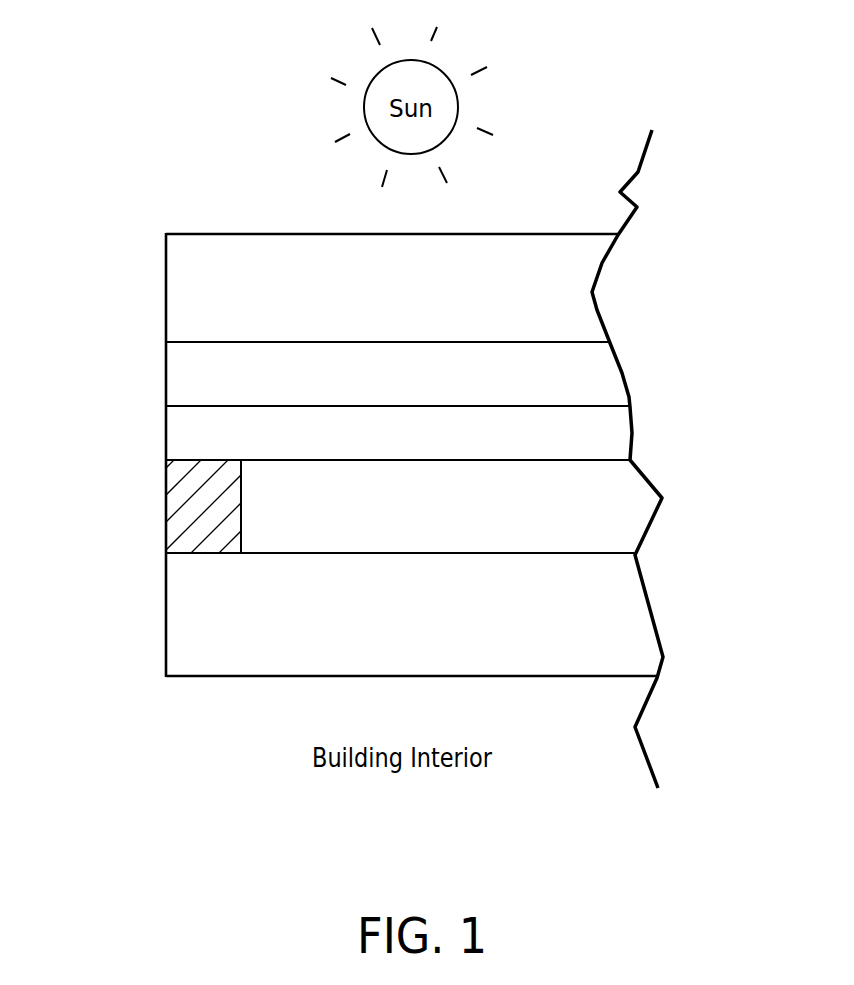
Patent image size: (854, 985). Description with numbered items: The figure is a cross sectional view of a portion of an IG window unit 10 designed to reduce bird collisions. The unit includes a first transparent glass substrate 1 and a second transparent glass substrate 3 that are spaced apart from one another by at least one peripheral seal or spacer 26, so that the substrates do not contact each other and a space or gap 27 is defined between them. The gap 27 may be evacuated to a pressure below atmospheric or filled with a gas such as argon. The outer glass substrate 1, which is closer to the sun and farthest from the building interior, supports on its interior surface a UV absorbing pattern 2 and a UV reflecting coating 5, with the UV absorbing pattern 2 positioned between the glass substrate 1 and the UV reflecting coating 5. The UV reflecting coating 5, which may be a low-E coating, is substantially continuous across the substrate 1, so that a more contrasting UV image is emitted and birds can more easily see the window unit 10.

The IG window unit 10 is at (156, 160).
The first transparent glass substrate 1 is at (203, 290).
The UV absorbing pattern 2 is at (203, 373).
The UV reflecting coating 5 is at (203, 432).
The spacer 26 is at (203, 505).
The gap 27 is at (642, 503).
The second transparent glass substrate 3 is at (203, 622).